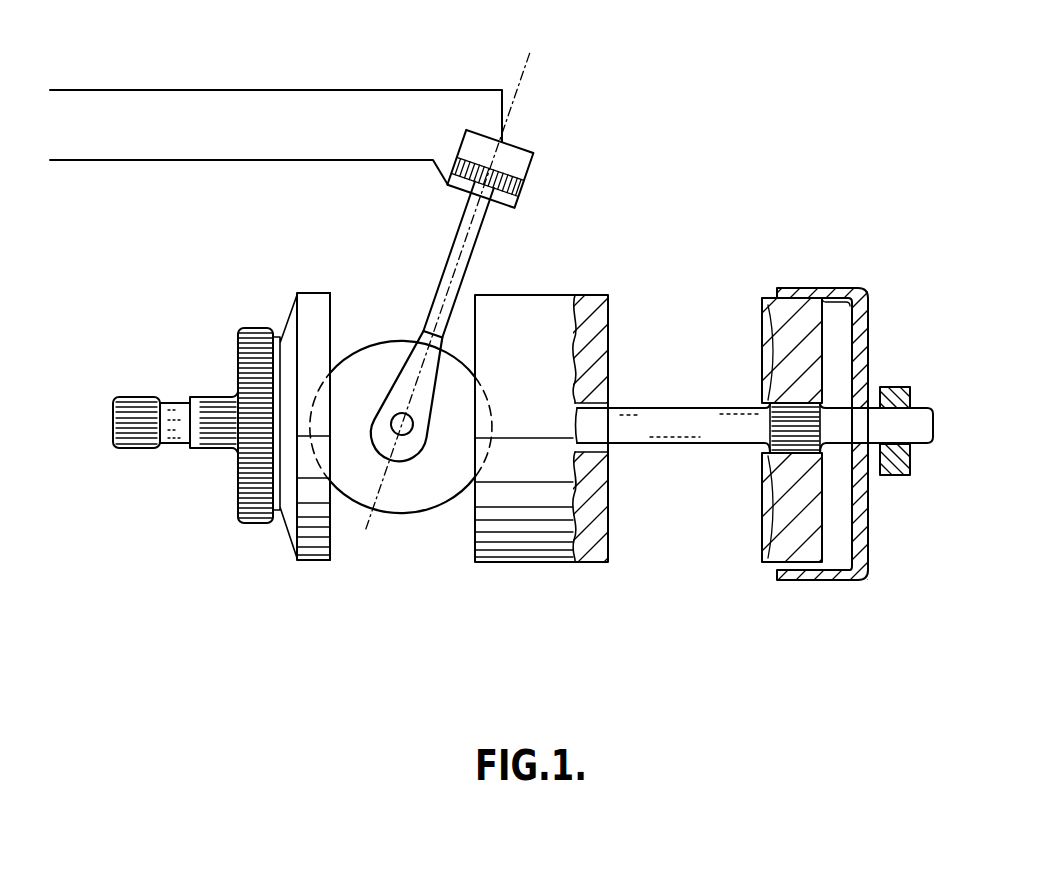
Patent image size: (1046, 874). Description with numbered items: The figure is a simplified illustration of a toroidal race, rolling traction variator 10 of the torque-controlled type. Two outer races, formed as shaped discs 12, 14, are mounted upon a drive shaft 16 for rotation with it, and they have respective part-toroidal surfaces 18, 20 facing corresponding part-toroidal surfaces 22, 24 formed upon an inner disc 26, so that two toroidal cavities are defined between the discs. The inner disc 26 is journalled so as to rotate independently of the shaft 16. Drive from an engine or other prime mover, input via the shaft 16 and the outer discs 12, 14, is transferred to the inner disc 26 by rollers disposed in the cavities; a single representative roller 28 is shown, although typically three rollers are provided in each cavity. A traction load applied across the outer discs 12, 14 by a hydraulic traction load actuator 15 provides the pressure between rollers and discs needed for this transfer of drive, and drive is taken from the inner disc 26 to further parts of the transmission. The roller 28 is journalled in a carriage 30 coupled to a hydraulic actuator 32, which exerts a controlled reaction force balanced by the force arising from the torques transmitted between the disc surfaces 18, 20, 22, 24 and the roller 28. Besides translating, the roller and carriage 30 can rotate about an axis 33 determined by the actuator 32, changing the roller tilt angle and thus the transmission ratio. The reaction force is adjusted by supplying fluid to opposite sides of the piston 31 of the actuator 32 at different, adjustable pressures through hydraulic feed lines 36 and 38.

The adjustment mechanism assembly 10 is at (318, 611).
The outer race disc 12 is at (308, 310).
The outer race disc 14 is at (773, 565).
The hydraulic traction load actuator 15 is at (872, 553).
The drive shaft 16 is at (210, 450).
The part-toroidal surface 18 is at (331, 318).
The part-toroidal surface 20 is at (777, 352).
The part-toroidal surface 22 is at (593, 442).
The part-toroidal surface 24 is at (582, 512).
The inner disc 26 is at (530, 338).
The roller 28 is at (384, 515).
The carriage 30 is at (423, 362).
The piston 31 is at (505, 172).
The hydraulic actuator 32 is at (521, 188).
The axis 33 is at (517, 102).
The hydraulic feed line 36 is at (335, 88).
The hydraulic feed line 38 is at (297, 162).